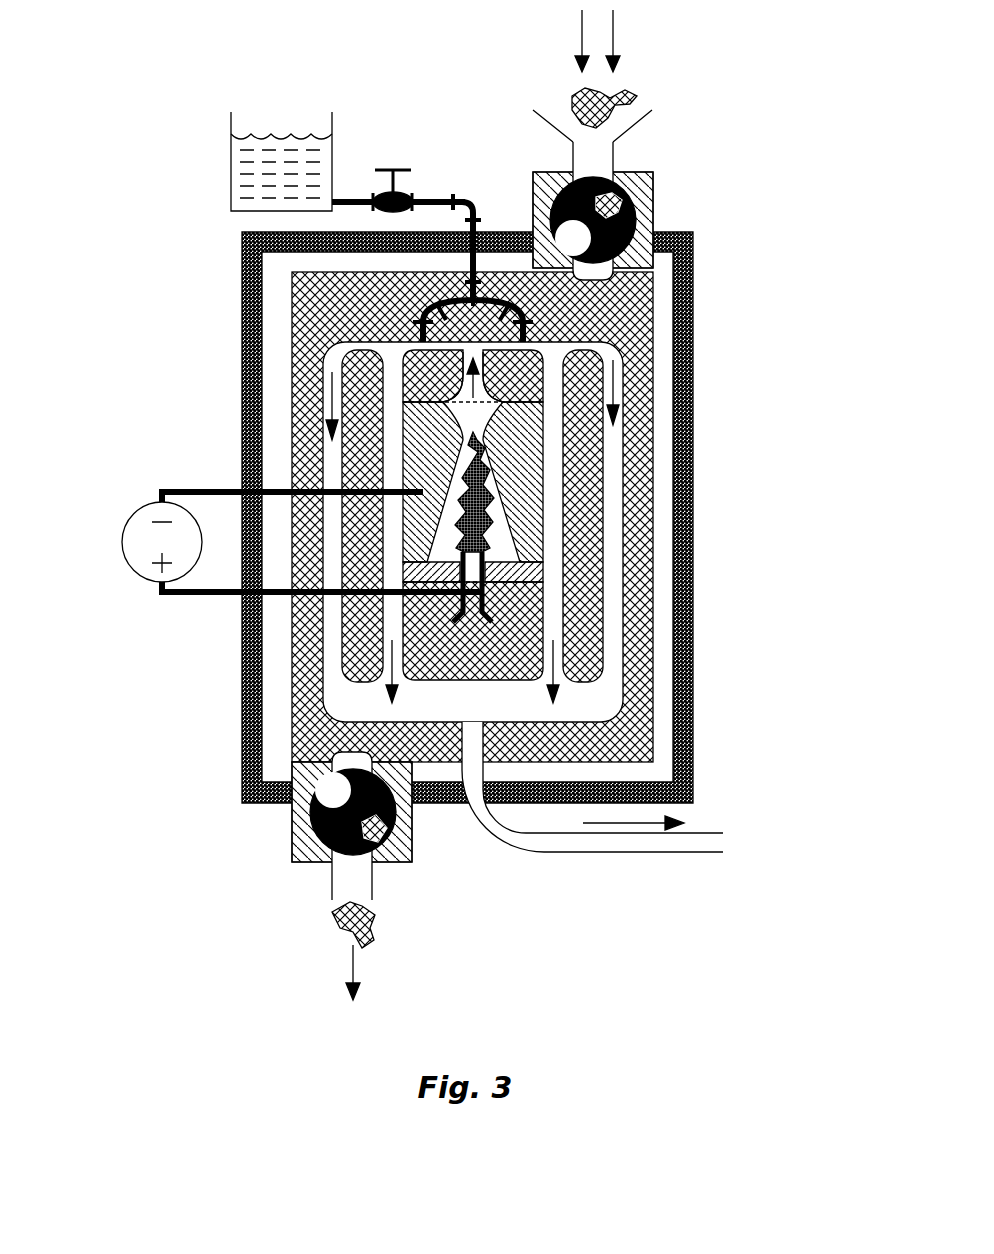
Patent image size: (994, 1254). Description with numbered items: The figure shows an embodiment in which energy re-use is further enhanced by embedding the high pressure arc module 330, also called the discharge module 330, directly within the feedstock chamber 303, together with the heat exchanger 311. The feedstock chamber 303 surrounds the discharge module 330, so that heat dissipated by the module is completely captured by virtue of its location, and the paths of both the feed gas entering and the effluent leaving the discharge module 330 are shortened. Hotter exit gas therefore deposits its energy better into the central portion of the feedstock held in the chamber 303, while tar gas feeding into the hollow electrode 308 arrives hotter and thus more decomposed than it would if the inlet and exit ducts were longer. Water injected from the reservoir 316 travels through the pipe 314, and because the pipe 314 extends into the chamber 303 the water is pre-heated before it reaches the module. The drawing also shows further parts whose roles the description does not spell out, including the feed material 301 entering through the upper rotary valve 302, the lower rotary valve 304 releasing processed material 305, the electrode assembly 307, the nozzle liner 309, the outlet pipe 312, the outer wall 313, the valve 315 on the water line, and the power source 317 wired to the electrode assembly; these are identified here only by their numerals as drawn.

The feed material 301 is at (628, 95).
The inlet rotary valve 302 is at (655, 198).
The feedstock chamber 303 is at (653, 365).
The outlet rotary valve 304 is at (292, 812).
The processed material 305 is at (330, 932).
The electrode 307 is at (520, 560).
The hollow electrode 308 is at (490, 552).
The nozzle liner 309 is at (427, 450).
The heat exchanger 311 is at (553, 350).
The gas outlet pipe 312 is at (673, 855).
The outer wall 313 is at (683, 447).
The pipe 314 is at (483, 260).
The valve 315 is at (393, 188).
The reservoir 316 is at (232, 170).
The power source 317 is at (122, 542).
The high pressure arc module 330 is at (403, 393).